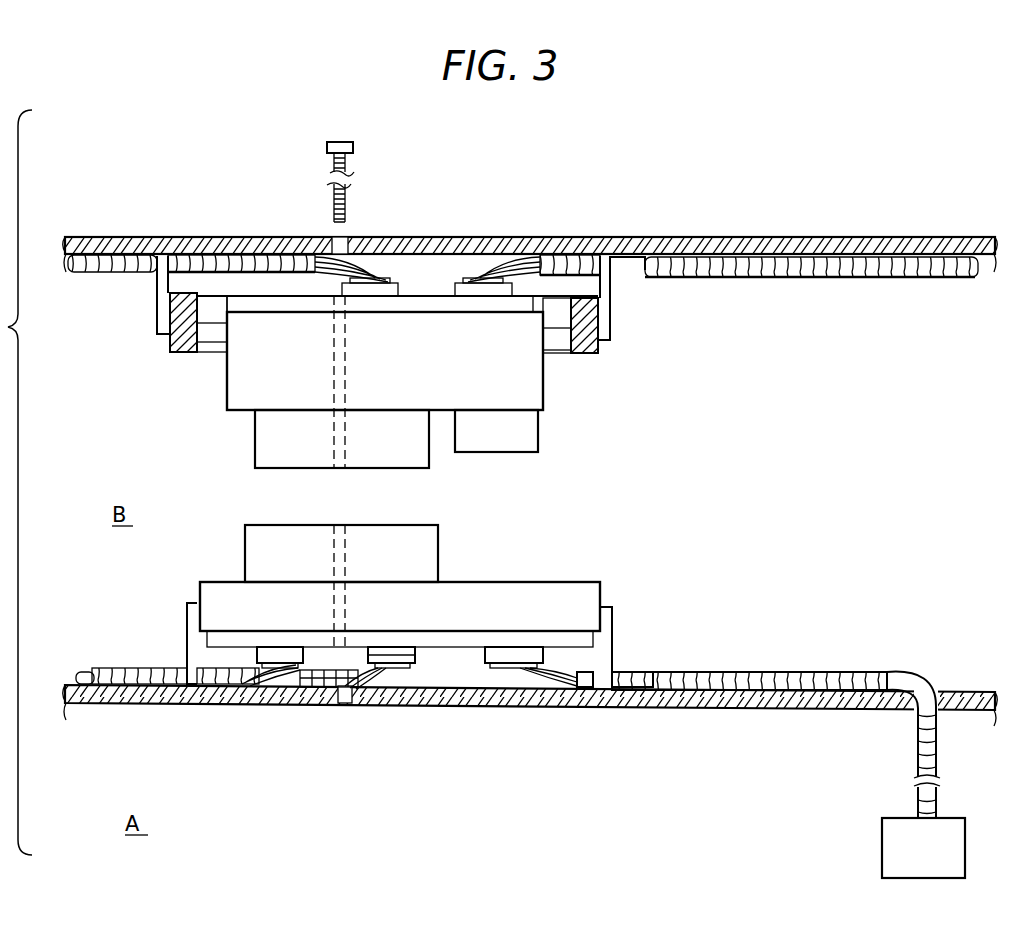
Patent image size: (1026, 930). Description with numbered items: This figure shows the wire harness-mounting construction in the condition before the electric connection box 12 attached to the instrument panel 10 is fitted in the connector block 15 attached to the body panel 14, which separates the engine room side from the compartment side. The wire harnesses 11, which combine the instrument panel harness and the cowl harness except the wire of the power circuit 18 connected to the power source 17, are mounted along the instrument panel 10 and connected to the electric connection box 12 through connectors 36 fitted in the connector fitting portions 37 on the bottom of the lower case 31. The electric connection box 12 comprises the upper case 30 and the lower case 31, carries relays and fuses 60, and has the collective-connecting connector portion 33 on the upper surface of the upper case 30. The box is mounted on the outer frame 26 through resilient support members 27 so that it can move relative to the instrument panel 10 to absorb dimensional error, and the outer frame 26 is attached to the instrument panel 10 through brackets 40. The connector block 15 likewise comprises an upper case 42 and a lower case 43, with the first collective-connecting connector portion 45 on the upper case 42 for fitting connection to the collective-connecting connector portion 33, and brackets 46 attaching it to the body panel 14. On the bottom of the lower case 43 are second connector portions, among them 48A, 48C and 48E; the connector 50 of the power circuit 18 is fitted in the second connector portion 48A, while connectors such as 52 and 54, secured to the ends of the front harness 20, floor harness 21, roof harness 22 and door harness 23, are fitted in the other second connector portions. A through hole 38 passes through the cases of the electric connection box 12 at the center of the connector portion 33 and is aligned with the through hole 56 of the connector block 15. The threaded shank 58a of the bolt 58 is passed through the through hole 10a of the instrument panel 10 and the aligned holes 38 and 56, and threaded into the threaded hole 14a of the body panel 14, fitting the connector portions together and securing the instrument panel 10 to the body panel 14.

The instrument panel 10 is at (790, 245).
The through hole 10a is at (338, 240).
The wire harnesses 11 is at (108, 258).
The electric connection box 12 is at (414, 350).
The body panel 14 is at (693, 707).
The threaded hole 14a is at (342, 703).
The connector block 15 is at (434, 656).
The power source 17 is at (965, 832).
The power circuit 18 is at (741, 690).
The front harness 20 is at (99, 704).
The floor harness 21 is at (140, 702).
The roof harness 22 is at (306, 702).
The door harness 23 is at (318, 702).
The outer frame 26 is at (172, 352).
The resilient support members 27 is at (215, 343).
The upper case 30 is at (496, 398).
The lower case 31 is at (432, 302).
The collective-connecting connector portion 33 is at (420, 456).
The connectors 36 is at (388, 268).
The connector fitting portions 37 is at (383, 282).
The through hole 38 is at (333, 430).
The brackets 40 is at (157, 316).
The upper case 42 is at (546, 590).
The lower case 43 is at (462, 646).
The first collective-connecting connector portion 45 is at (245, 553).
The brackets 46 is at (613, 631).
The second connector portion 48A is at (507, 661).
The second connector portion 48C is at (248, 704).
The second connector portion 48E is at (380, 692).
The connector 50 is at (547, 702).
The connector 52 is at (270, 702).
The connector 54 is at (405, 683).
The through hole 56 is at (338, 530).
The bolt 58 is at (333, 169).
The threaded shank 58a is at (334, 166).
The relays and fuses 60 is at (534, 438).